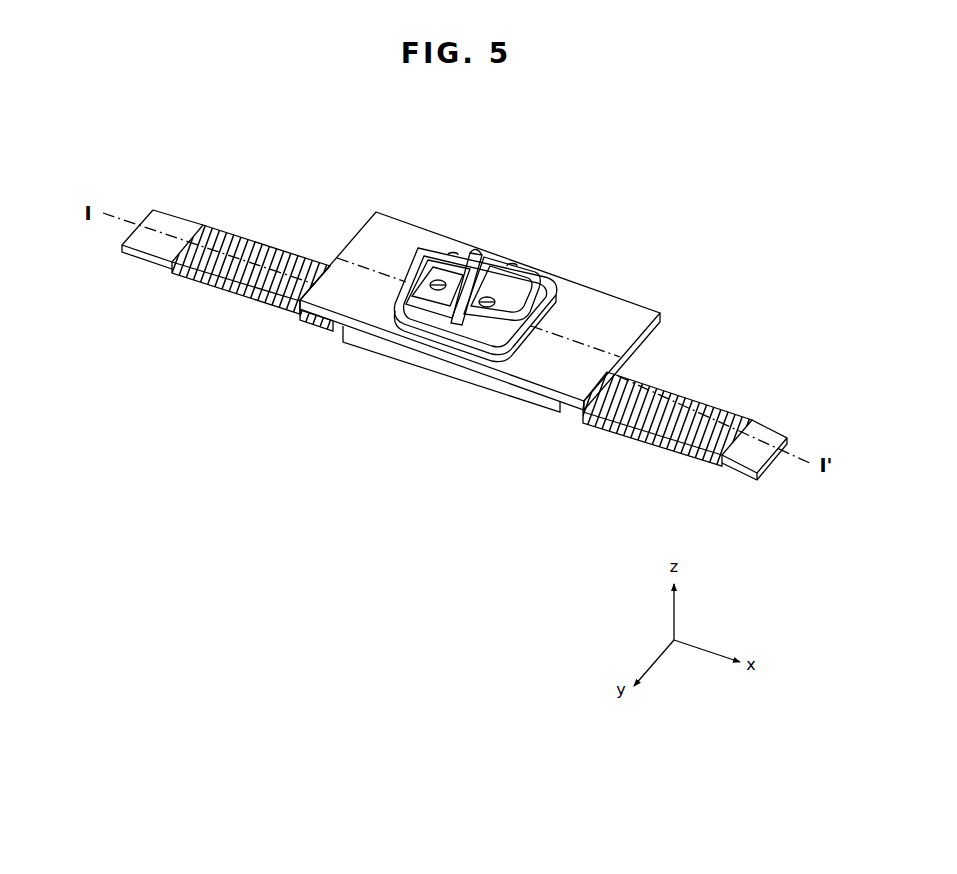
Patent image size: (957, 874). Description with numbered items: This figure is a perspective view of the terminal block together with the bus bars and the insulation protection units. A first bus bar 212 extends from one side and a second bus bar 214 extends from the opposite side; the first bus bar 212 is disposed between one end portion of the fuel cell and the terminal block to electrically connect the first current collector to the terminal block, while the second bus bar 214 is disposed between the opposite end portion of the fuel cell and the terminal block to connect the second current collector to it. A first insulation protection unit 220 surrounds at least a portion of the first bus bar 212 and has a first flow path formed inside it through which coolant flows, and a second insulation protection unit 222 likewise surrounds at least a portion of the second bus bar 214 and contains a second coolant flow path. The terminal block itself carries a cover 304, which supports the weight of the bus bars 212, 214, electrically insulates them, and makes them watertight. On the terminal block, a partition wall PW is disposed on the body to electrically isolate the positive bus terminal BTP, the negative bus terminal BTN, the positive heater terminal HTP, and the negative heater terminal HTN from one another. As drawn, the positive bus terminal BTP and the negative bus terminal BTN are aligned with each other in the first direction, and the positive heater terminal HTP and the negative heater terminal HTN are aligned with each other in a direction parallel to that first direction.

The first bus bar 212 is at (173, 229).
The first insulation protection unit 220 is at (253, 250).
The cover 304 is at (618, 310).
The second insulation protection unit 222 is at (682, 405).
The second bus bar 214 is at (762, 438).
The positive heater terminal HTP is at (446, 242).
The partition wall PW is at (481, 250).
The negative heater terminal HTN is at (530, 278).
The positive bus terminal BTP is at (425, 288).
The negative bus terminal BTN is at (472, 307).